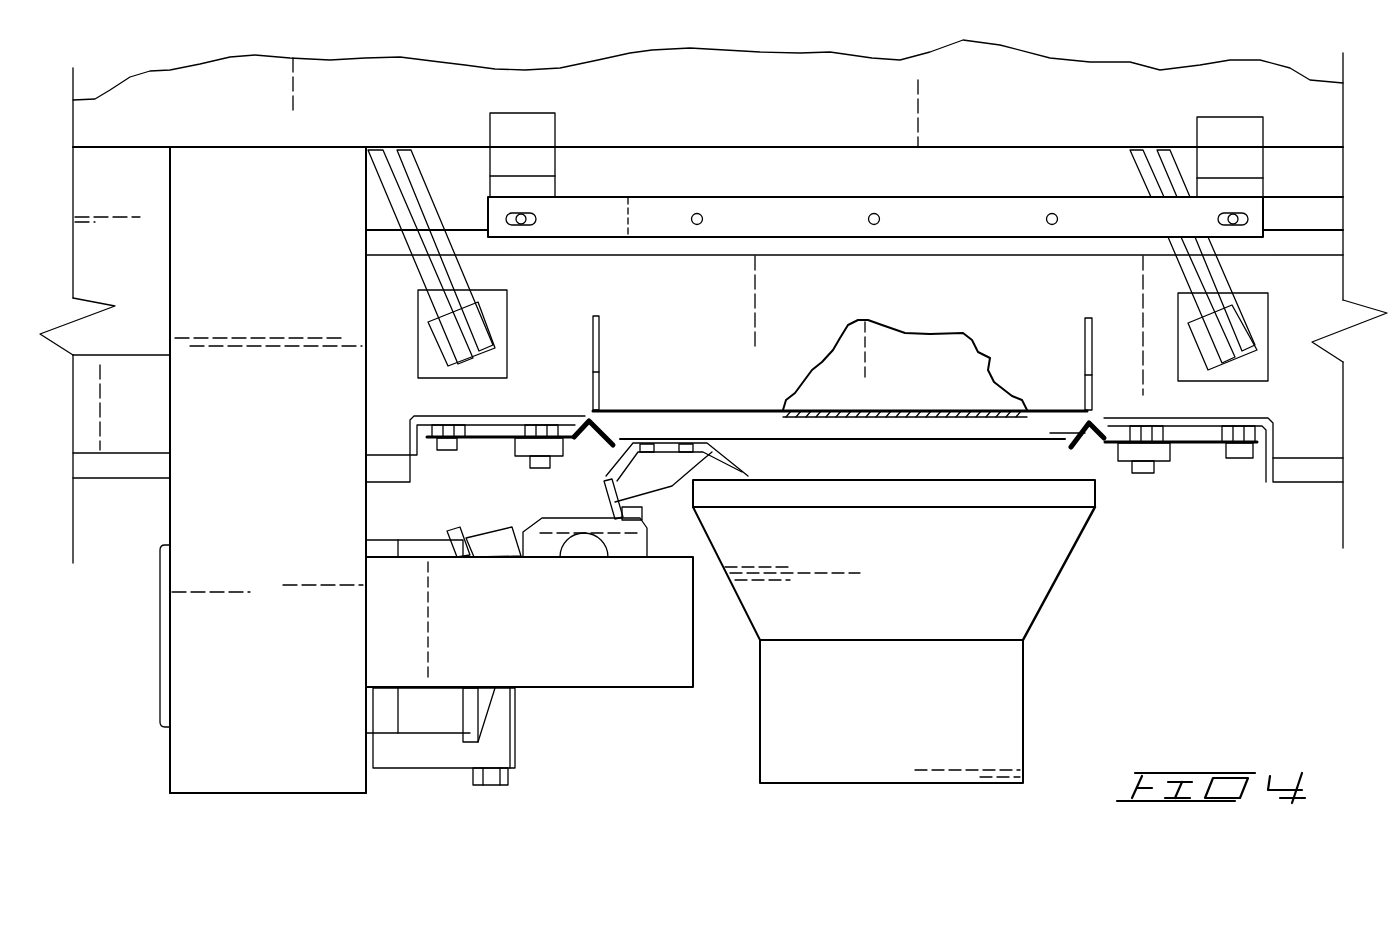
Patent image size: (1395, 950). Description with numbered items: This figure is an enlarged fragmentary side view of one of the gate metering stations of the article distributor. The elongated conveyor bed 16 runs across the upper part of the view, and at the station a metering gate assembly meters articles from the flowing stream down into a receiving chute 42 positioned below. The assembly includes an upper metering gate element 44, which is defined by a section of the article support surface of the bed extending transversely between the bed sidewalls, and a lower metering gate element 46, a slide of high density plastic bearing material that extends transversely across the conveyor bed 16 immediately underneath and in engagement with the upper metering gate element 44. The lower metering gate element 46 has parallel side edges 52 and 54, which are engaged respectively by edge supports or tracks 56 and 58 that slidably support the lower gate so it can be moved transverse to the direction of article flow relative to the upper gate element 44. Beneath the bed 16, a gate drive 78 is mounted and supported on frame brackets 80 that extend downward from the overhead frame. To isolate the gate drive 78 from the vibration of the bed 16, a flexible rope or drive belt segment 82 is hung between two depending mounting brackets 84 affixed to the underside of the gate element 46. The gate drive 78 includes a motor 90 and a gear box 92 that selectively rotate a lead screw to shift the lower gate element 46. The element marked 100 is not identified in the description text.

The conveyor bed 16 is at (1307, 292).
The receiving chute 42 is at (975, 590).
The upper metering gate element 44 is at (890, 410).
The lower metering gate element 46 is at (822, 428).
The side edge 52 is at (583, 412).
The side edge 54 is at (1097, 418).
The edge support 56 is at (598, 438).
The edge support 58 is at (1082, 442).
The gate drive 78 is at (594, 576).
The frame bracket 80 is at (651, 658).
The drive belt segment 82 is at (605, 497).
The mounting bracket 84 is at (653, 468).
The motor 90 is at (413, 548).
The gear box 92 is at (624, 548).
The spring 100 is at (516, 527).